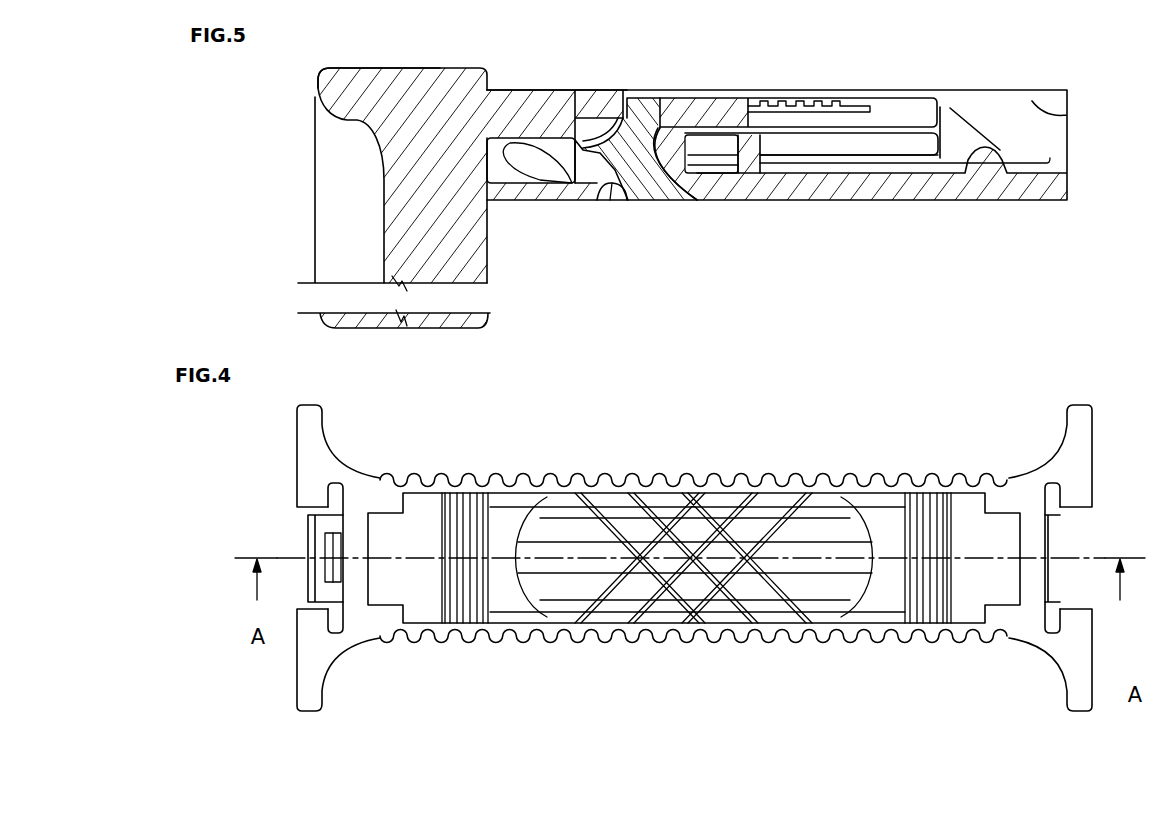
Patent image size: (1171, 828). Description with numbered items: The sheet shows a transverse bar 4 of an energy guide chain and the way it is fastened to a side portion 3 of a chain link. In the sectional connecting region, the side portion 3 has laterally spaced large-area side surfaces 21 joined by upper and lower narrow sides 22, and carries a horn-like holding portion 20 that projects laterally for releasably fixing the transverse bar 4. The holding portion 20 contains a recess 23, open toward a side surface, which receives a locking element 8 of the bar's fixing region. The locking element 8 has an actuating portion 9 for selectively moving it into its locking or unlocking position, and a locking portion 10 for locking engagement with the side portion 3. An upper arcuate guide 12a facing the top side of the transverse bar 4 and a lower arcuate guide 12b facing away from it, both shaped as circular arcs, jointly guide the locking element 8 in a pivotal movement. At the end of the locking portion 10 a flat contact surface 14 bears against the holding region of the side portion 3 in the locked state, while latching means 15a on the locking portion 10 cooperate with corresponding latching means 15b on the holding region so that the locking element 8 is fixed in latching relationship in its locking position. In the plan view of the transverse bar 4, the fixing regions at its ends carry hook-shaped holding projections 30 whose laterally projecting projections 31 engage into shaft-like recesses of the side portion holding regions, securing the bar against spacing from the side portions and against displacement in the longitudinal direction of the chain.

In FIG. 5, the side portion 3 is at (392, 100).
In FIG. 5, the narrow sides 22 is at (440, 68).
In FIG. 5, the holding portion 20 is at (520, 97).
In FIG. 5, the upper arcuate guide 12a is at (598, 120).
In FIG. 5, the lower arcuate guide 12b is at (691, 160).
In FIG. 5, the locking element 8 is at (714, 105).
In FIG. 5, the actuating portion 9 is at (800, 100).
In FIG. 5, the recess 23 is at (495, 152).
In FIG. 5, the flat contact surface 14 is at (524, 168).
In FIG. 5, the latching means 15a is at (612, 177).
In FIG. 5, the latching means 15b is at (618, 184).
In FIG. 5, the transverse bar 4 is at (890, 190).
In FIG. 4, the transverse bar 4 is at (738, 452).
In FIG. 5, the side surfaces 21 is at (492, 263).
In FIG. 4, the hook-shaped holding projections 30 is at (320, 458).
In FIG. 4, the laterally projecting projections 31 is at (308, 497).
In FIG. 4, the locking portion 10 is at (317, 543).